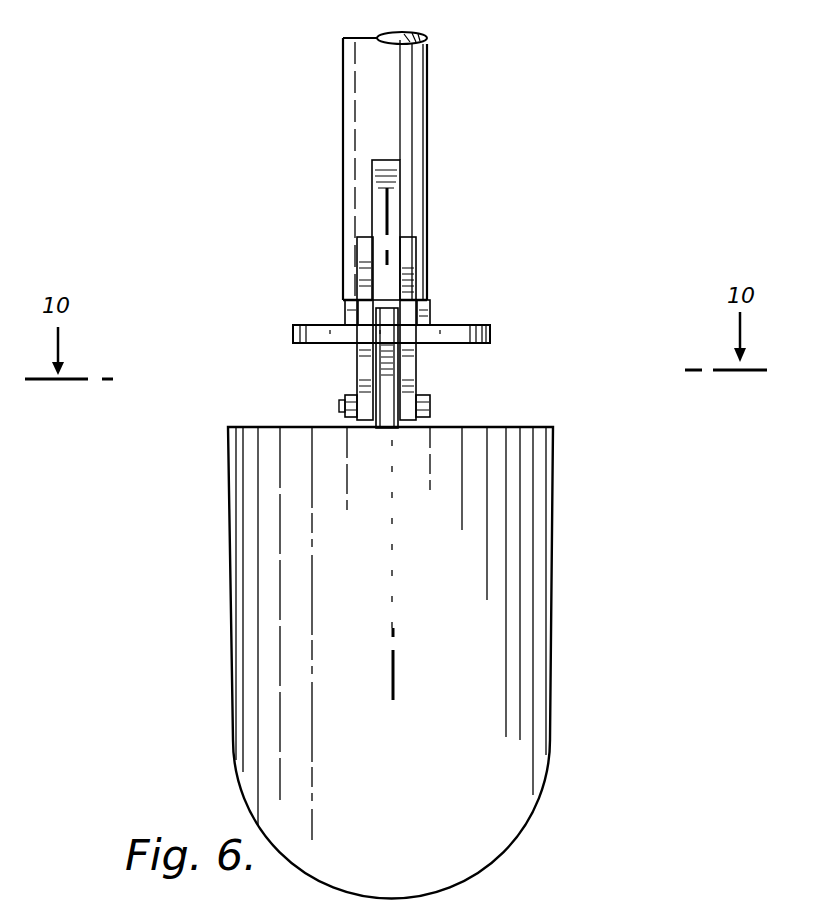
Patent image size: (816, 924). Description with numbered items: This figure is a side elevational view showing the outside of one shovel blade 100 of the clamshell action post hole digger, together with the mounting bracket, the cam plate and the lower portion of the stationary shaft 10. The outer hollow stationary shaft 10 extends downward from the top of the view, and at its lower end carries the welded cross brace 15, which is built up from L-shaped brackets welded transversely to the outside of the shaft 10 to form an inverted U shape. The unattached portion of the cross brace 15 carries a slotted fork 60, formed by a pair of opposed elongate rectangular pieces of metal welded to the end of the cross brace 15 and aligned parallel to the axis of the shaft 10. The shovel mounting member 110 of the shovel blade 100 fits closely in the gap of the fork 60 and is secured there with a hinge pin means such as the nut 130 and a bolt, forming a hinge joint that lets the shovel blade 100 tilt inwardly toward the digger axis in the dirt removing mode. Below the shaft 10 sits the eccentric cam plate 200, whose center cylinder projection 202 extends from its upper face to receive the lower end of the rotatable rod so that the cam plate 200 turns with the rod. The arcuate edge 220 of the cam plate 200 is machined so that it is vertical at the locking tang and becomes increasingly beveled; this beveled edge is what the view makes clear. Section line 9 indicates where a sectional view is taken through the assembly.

The outer hollow stationary shaft 10 is at (357, 90).
The welded cross brace 15 is at (398, 180).
The section line 9- 9 is at (375, 212).
The slotted fork 60 is at (363, 258).
The center cylinder projection 202 is at (432, 315).
The eccentric cam plate 200 is at (492, 331).
The arcuate edge 220 is at (293, 335).
The shovel mounting member 110 is at (385, 372).
The nut 130 is at (430, 405).
The shovel blade 100 is at (500, 808).